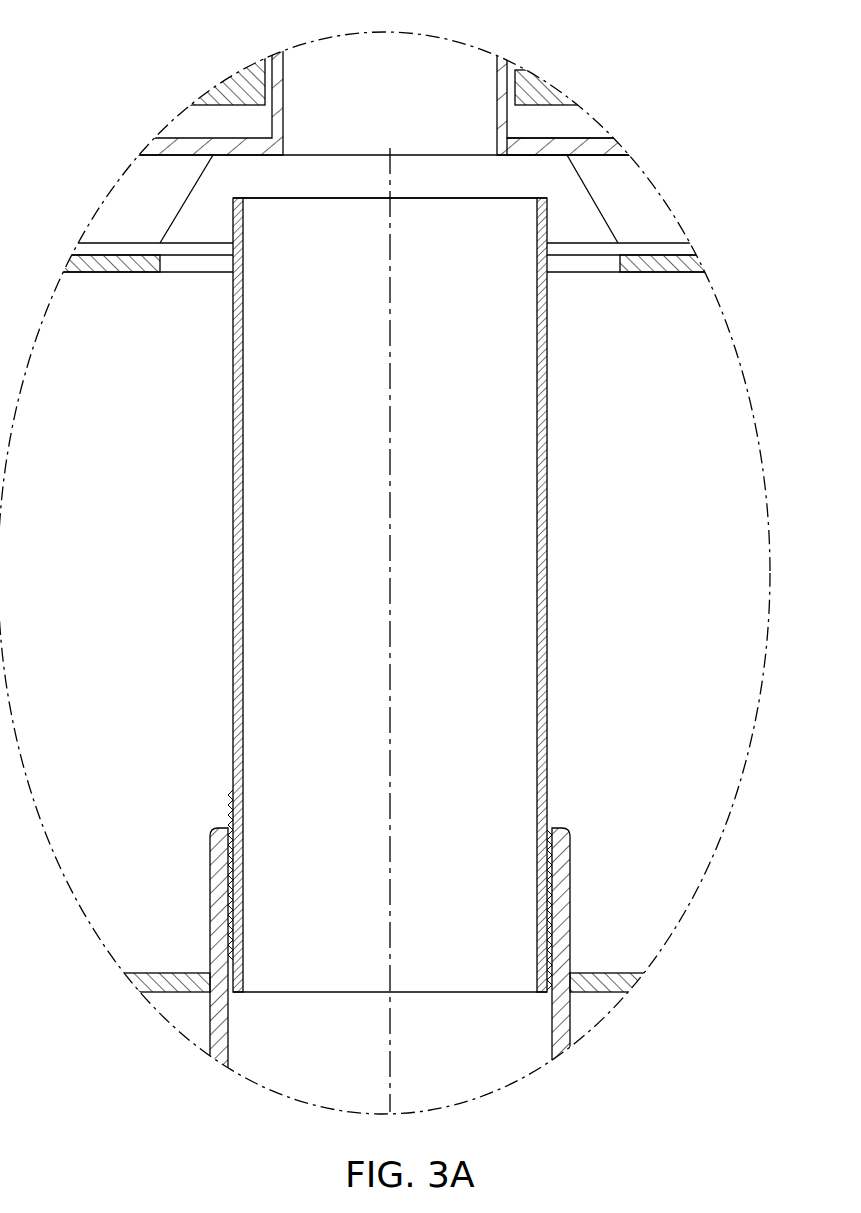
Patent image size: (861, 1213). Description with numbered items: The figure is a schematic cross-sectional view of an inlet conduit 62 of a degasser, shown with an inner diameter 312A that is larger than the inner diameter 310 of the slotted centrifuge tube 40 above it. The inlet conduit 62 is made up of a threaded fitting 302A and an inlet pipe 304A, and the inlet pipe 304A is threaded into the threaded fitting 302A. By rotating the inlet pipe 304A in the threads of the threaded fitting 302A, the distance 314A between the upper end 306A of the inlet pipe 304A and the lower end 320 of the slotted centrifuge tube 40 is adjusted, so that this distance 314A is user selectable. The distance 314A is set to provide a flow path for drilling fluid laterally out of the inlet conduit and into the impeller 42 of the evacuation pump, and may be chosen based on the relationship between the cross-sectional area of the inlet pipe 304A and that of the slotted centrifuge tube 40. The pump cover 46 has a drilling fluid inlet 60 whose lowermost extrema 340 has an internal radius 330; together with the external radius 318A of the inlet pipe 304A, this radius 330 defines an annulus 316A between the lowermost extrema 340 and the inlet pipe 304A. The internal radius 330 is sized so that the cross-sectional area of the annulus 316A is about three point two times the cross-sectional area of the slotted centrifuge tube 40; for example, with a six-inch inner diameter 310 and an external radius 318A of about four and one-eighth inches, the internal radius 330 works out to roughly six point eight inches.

The slotted centrifuge tube 40 is at (397, 79).
The impeller 42 is at (650, 215).
The pump cover 46 is at (668, 265).
The drilling fluid inlet 60 is at (198, 262).
The inlet conduit 62 is at (566, 798).
The threaded fitting 302A is at (570, 883).
The inlet pipe 304A is at (548, 662).
The upper end 306A is at (290, 198).
The inner diameter 310 is at (496, 108).
The inner diameter 312A is at (536, 355).
The distance 314A is at (507, 157).
The annulus 316A is at (619, 287).
The external radius 318A is at (536, 412).
The lower end 320 is at (540, 155).
The internal radius 330 is at (388, 300).
The lowermost extrema 340 is at (620, 272).